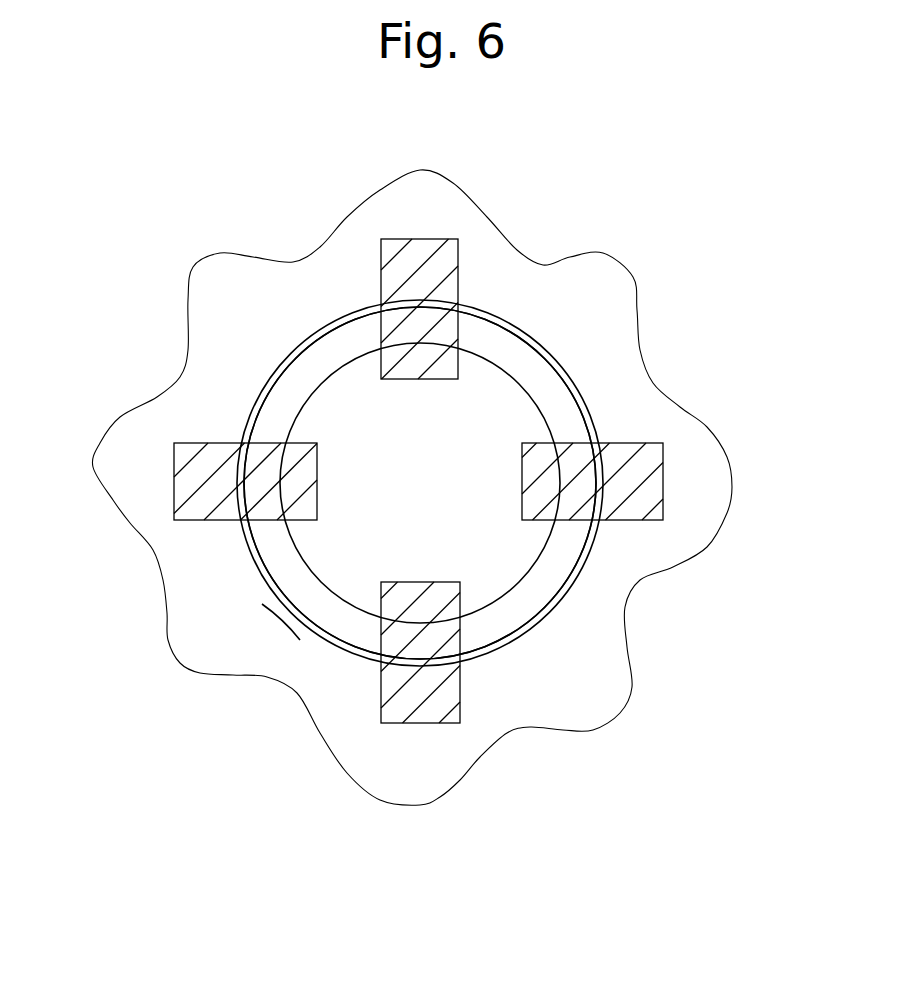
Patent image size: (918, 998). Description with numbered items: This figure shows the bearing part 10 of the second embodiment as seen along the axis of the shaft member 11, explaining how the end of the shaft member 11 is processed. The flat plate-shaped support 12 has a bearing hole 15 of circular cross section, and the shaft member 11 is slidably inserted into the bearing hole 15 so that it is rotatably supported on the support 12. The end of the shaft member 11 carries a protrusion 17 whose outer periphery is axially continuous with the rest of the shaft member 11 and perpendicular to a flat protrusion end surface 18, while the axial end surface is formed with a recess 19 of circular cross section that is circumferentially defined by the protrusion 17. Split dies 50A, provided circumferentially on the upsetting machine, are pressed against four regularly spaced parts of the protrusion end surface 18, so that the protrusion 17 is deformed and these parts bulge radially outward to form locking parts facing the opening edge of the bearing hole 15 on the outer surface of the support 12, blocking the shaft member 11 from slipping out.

The bearing part 10 is at (404, 476).
The shaft member 11 is at (330, 332).
The support 12 is at (588, 603).
The bearing hole 15 is at (277, 592).
The protrusion 17 is at (548, 362).
The protrusion end surface 18 is at (552, 395).
The recess 19 is at (480, 403).
The split dies 50A is at (427, 250).